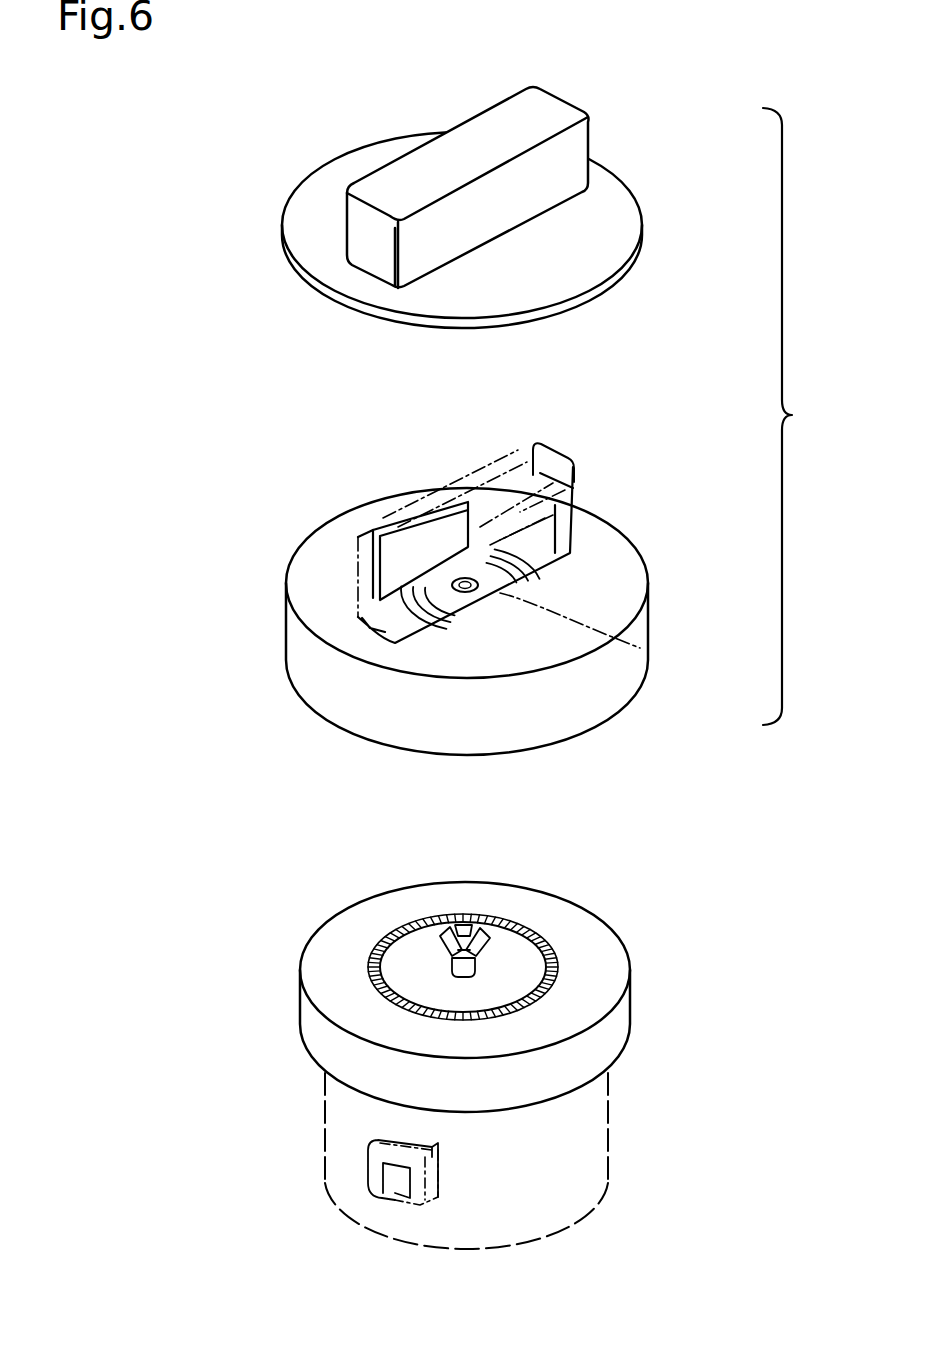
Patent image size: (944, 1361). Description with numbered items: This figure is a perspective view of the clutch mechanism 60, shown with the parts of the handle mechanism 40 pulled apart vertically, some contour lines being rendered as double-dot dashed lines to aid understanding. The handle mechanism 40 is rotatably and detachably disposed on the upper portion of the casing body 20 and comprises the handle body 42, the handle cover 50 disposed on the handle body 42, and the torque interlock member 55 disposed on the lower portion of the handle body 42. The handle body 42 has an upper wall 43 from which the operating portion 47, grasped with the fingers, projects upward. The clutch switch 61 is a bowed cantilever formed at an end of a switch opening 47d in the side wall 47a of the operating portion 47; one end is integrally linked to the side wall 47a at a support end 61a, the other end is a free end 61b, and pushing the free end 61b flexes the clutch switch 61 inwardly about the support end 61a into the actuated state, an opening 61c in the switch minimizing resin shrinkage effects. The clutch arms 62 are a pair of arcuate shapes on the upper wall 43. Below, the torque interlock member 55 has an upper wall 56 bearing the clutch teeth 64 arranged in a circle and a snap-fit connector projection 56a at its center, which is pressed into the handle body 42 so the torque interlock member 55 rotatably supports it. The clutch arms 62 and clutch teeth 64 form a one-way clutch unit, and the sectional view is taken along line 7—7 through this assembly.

The section line 7— 7 is at (487, 528).
The casing body 20 is at (583, 1123).
The handle mechanism 40 is at (797, 416).
The handle body 42 is at (648, 592).
The upper wall 43 is at (628, 553).
The operating portion 47 is at (567, 457).
The side wall 47a is at (545, 518).
The switch opening 47d is at (565, 490).
The handle cover 50 is at (645, 207).
The torque interlock member 55 is at (623, 1005).
The upper wall 56 is at (602, 960).
The snap-fit connector projection 56a is at (478, 948).
The clutch mechanism 60 is at (244, 652).
The clutch switch 61 is at (380, 527).
The support end 61a is at (472, 597).
The free end 61b is at (553, 515).
The opening 61c is at (640, 645).
The clutch arms 62 is at (548, 547).
The clutch teeth 64 is at (533, 930).